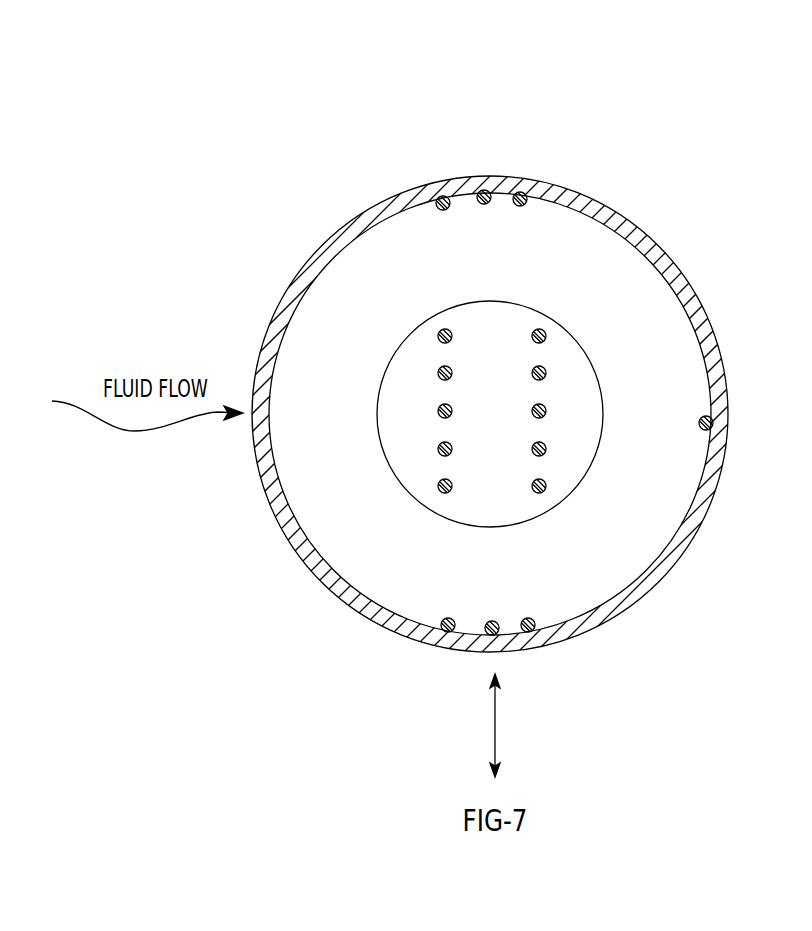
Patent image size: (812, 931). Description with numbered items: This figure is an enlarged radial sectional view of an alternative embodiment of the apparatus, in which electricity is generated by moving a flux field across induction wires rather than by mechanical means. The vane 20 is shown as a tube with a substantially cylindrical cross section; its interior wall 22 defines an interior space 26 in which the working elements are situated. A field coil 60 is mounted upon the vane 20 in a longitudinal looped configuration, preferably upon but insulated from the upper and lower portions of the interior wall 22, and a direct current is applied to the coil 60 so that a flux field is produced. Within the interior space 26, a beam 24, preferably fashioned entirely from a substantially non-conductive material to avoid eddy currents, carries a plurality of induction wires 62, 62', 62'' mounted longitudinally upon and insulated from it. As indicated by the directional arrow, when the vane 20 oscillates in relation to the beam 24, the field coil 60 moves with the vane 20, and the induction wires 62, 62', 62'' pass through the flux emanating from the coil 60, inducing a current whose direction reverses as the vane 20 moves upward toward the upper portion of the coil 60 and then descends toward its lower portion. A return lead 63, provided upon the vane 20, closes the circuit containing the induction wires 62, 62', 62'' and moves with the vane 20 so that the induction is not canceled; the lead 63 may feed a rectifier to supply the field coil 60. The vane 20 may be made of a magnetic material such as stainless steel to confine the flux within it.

The vane 20 is at (490, 392).
The interior wall 22 is at (406, 415).
The beam 24 is at (594, 385).
The interior space 26 is at (464, 427).
The field coil 60 is at (467, 403).
The induction wire 62 is at (429, 306).
The induction wire 62' is at (662, 369).
The induction wire 62'' is at (317, 523).
The return lead 63 is at (752, 454).